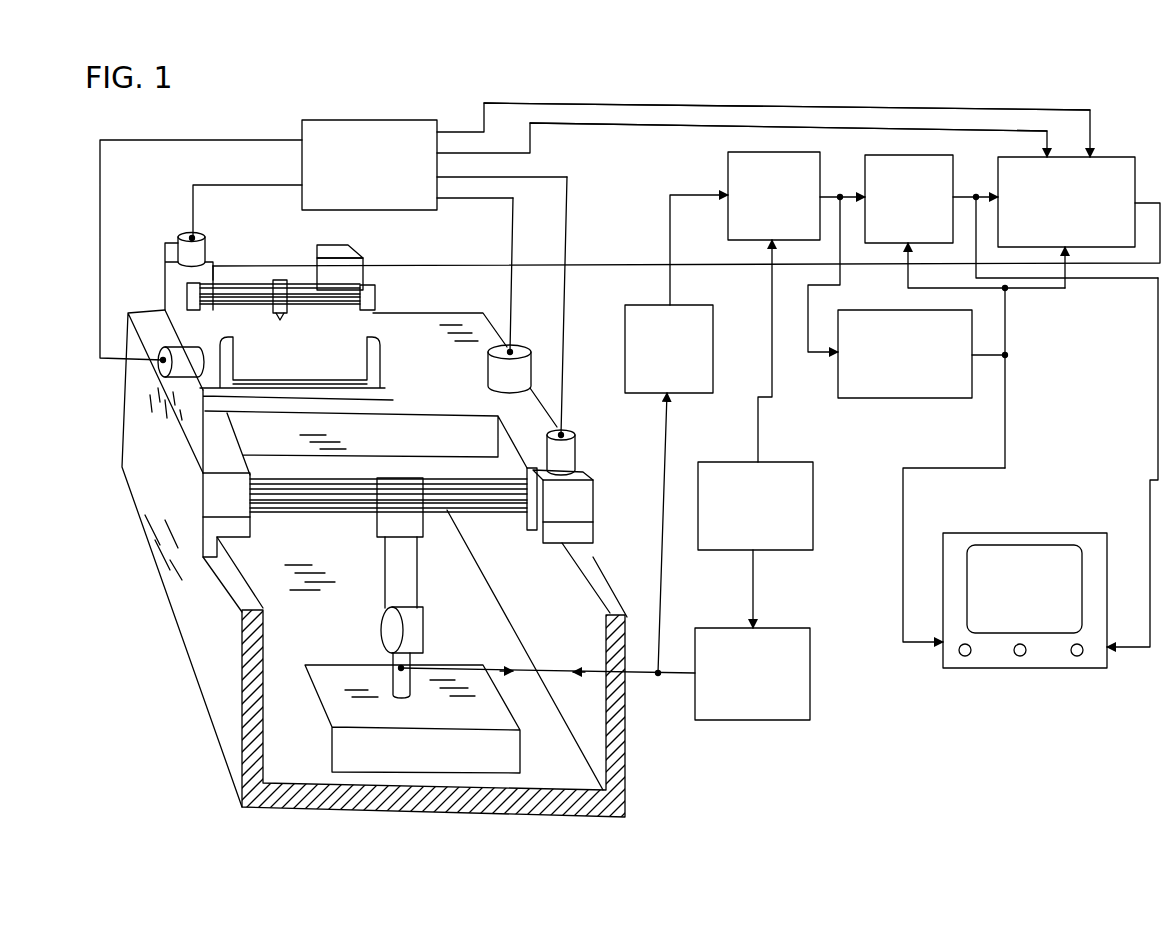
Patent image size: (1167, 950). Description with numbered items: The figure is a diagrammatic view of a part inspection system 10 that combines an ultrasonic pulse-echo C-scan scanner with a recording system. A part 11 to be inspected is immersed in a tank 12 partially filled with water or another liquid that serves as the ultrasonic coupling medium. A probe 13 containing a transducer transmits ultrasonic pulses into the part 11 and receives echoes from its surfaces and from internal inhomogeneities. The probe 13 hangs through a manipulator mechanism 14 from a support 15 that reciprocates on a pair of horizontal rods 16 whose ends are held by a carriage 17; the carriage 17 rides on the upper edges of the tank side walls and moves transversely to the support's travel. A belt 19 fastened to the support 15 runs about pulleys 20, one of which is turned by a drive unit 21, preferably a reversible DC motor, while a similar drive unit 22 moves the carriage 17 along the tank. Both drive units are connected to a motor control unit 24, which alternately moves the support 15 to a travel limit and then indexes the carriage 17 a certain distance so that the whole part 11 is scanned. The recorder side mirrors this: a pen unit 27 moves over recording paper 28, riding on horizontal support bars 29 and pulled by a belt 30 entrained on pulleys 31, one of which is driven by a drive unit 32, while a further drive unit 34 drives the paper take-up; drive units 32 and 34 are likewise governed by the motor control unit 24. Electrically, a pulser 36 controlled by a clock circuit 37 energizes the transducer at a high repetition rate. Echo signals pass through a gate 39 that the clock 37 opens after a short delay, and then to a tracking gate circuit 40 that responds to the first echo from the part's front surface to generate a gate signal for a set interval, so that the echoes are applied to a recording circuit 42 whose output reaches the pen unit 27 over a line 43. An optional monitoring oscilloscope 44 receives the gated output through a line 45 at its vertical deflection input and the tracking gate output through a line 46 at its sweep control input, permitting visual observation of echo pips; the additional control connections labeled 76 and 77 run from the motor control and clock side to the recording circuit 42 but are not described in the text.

The part inspection system 10 is at (885, 730).
The part 11 is at (497, 724).
The tank 12 is at (618, 744).
The probe 13 is at (395, 687).
The manipulator mechanism 14 is at (424, 626).
The support 15 is at (400, 478).
The horizontal rods 16 is at (329, 500).
The carriage 17 is at (594, 491).
The belt 19 is at (333, 478).
The pulleys 20 is at (258, 506).
The drive unit 21 is at (578, 445).
The drive unit 22 is at (518, 377).
The motor control unit 24 is at (168, 253).
The pen unit 27 is at (266, 278).
The recording paper 28 is at (354, 355).
The horizontal support bars 29 is at (248, 281).
The belt 30 is at (353, 281).
The pulleys 31 is at (196, 294).
The drive unit 32 is at (204, 237).
The drive unit 34 is at (160, 368).
The pulser 36 is at (808, 690).
The clock circuit 37 is at (803, 488).
The gate 39 is at (735, 161).
The tracking gate circuit 40 is at (877, 390).
The recording circuit 42 is at (1130, 178).
The line 43 is at (600, 259).
The monitoring oscilloscope 44 is at (867, 163).
The line 45 is at (1149, 472).
The line 46 is at (905, 513).
The control line 76 is at (967, 134).
The control line 77 is at (1064, 111).